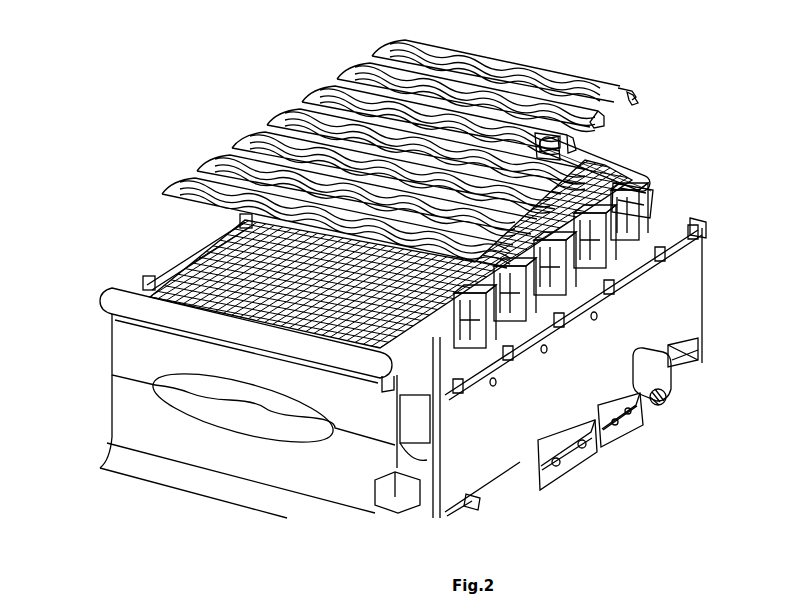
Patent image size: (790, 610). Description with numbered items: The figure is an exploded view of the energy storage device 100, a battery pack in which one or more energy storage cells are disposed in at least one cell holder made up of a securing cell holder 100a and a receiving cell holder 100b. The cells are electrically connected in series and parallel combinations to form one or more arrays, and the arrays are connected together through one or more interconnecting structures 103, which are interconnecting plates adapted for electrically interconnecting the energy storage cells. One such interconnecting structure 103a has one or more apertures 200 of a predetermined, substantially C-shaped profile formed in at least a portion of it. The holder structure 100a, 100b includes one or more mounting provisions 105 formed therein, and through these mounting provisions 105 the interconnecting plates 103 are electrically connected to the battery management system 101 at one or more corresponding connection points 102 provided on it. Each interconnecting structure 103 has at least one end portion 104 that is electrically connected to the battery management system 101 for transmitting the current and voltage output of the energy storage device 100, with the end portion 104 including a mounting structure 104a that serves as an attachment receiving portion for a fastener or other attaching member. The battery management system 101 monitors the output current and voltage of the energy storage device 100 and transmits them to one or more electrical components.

The apertures 200 is at (96, 63).
The energy storage device 100 is at (409, 496).
The securing cell holder 100a is at (133, 355).
The receiving cell holder 100b is at (122, 423).
The battery management system 101 is at (688, 284).
The connection points 102 is at (702, 228).
The interconnecting structures 103 is at (266, 126).
The interconnecting structure 103a is at (340, 74).
The end portion 104 is at (632, 195).
The mounting structure 104a is at (640, 101).
The mounting provisions 105 is at (637, 207).